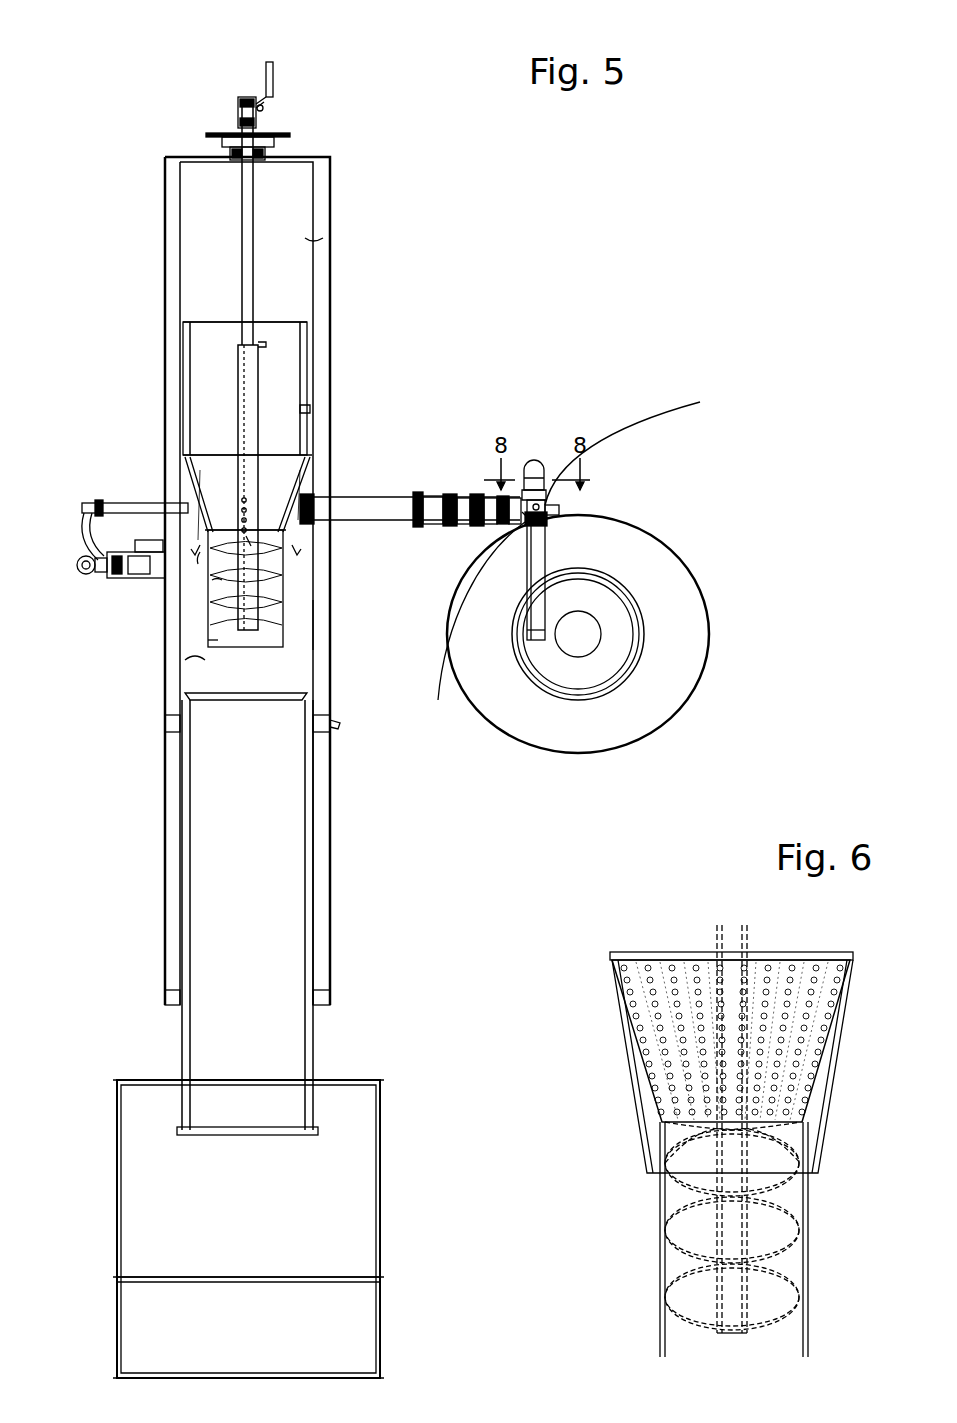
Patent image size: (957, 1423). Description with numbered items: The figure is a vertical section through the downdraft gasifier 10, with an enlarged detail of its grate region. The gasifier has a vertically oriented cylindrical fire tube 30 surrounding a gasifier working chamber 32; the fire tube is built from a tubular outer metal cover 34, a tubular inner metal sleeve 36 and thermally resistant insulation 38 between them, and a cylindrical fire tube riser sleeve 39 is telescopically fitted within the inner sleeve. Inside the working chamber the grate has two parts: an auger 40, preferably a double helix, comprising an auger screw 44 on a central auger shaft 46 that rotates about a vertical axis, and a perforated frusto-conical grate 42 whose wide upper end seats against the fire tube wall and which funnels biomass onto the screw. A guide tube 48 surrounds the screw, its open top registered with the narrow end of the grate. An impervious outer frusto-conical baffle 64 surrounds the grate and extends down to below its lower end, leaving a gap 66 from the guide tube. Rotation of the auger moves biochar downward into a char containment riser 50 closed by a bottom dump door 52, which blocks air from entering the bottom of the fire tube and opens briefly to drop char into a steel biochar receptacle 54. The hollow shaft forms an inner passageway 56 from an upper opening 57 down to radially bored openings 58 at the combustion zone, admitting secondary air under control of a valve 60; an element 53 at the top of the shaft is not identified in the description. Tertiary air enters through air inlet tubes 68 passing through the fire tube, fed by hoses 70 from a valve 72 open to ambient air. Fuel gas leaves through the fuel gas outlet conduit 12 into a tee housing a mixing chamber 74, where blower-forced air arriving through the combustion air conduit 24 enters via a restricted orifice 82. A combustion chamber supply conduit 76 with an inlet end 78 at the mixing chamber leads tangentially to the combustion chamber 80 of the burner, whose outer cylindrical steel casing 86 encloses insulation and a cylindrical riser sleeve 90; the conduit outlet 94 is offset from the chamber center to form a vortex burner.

In FIG. 5, the downdraft gasifier 10 is at (412, 411).
In FIG. 5, the fuel gas outlet conduit 12 is at (370, 505).
In FIG. 5, the combustion air conduit 24 is at (532, 468).
In FIG. 5, the fire tube 30 is at (170, 775).
In FIG. 5, the gasifier working chamber 32 is at (280, 215).
In FIG. 5, the tubular outer metal cover 34 is at (330, 370).
In FIG. 5, the tubular inner metal sleeve 36 is at (322, 242).
In FIG. 5, the thermally resistant insulation 38 is at (320, 625).
In FIG. 5, the fire tube riser sleeve 39 is at (300, 410).
In FIG. 5, the auger 40 is at (255, 600).
In FIG. 6, the auger 40 is at (780, 1208).
In FIG. 5, the frusto-conical grate 42 is at (215, 490).
In FIG. 6, the frusto-conical grate 42 is at (735, 1050).
In FIG. 5, the auger screw 44 is at (228, 585).
In FIG. 5, the central auger shaft 46 is at (237, 392).
In FIG. 6, the central auger shaft 46 is at (747, 1222).
In FIG. 5, the guide tube 48 is at (212, 638).
In FIG. 5, the char containment riser 50 is at (260, 1035).
In FIG. 5, the bottom dump door 52 is at (210, 1137).
In FIG. 5, the mounting plate 53 is at (268, 133).
In FIG. 5, the biochar receptacle 54 is at (345, 1208).
In FIG. 5, the inner passageway 56 is at (245, 226).
In FIG. 5, the upper opening 57 is at (246, 100).
In FIG. 5, the radially bored openings 58 is at (250, 500).
In FIG. 5, the valve 60 is at (240, 104).
In FIG. 5, the outer frusto-conical baffle 64 is at (290, 528).
In FIG. 6, the outer frusto-conical baffle 64 is at (830, 1095).
In FIG. 5, the gap 66 is at (200, 555).
In FIG. 5, the air inlet tubes 68 is at (130, 502).
In FIG. 5, the hoses 70 is at (82, 530).
In FIG. 5, the valve 72 is at (95, 568).
In FIG. 5, the mixing chamber 74 is at (522, 512).
In FIG. 5, the combustion chamber supply conduit 76 is at (545, 563).
In FIG. 5, the inlet end 78 is at (545, 522).
In FIG. 5, the combustion chamber 80 is at (620, 648).
In FIG. 5, the restricted orifice 82 is at (672, 412).
In FIG. 5, the outer cylindrical steel casing 86 is at (690, 633).
In FIG. 5, the cylindrical riser sleeve 90 is at (643, 624).
In FIG. 5, the outlet 94 is at (535, 640).